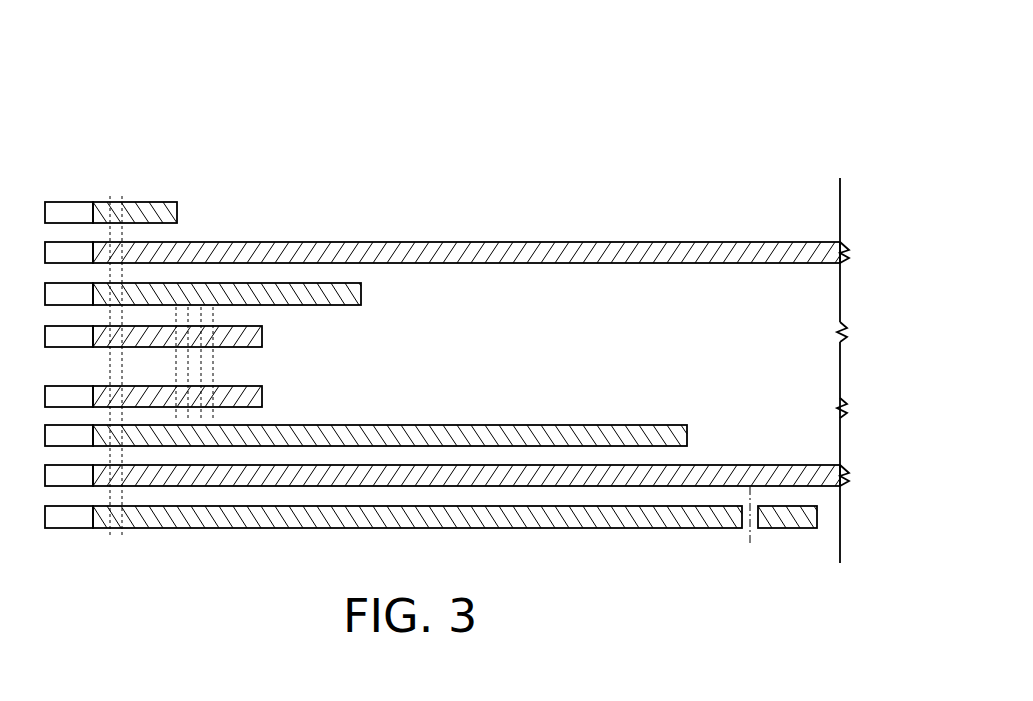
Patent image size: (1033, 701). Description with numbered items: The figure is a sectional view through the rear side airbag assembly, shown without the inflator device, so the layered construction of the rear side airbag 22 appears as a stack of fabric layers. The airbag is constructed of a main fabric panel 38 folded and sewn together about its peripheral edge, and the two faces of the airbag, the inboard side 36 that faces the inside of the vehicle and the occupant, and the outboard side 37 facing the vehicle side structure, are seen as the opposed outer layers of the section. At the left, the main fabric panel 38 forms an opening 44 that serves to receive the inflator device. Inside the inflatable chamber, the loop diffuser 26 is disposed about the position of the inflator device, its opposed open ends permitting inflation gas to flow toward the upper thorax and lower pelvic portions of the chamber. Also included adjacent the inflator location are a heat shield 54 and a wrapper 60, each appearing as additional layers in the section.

The rear side airbag 22 is at (788, 120).
The loop diffuser 26 is at (263, 334).
The inboard side 36 is at (507, 230).
The outboard side 37 is at (642, 494).
The main fabric panel 38 is at (471, 359).
The opening 44 is at (82, 556).
The heat shield 54 is at (325, 283).
The wrapper 60 is at (153, 201).